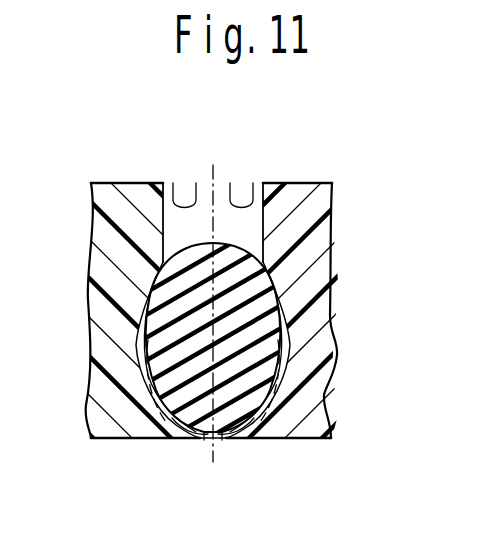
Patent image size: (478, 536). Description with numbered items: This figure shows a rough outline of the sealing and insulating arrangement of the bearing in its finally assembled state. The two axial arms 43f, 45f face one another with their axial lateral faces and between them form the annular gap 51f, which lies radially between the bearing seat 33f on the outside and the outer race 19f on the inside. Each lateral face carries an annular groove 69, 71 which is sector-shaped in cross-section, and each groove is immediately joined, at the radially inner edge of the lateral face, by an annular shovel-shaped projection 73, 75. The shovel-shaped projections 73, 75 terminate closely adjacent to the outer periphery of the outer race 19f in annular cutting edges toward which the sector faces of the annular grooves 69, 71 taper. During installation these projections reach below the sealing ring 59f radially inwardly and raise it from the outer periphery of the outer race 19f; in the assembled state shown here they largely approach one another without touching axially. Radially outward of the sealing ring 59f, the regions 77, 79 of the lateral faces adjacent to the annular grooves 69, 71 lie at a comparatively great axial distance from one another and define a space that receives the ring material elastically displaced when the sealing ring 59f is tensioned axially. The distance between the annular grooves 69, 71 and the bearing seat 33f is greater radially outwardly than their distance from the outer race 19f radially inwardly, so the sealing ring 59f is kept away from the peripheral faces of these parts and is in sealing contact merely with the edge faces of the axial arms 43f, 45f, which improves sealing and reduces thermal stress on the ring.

The axial arm 43f is at (110, 185).
The axial arm 45f is at (334, 189).
The annular gap 51f is at (195, 188).
The bearing seat 33f is at (238, 188).
The region of lateral face 77 is at (180, 186).
The region of lateral face 79 is at (249, 186).
The sealing ring 59f is at (158, 290).
The annular groove 69 is at (152, 352).
The annular groove 71 is at (292, 349).
The shovel-shaped projection 73 is at (178, 440).
The shovel-shaped projection 75 is at (250, 441).
The outer race 19f is at (218, 442).